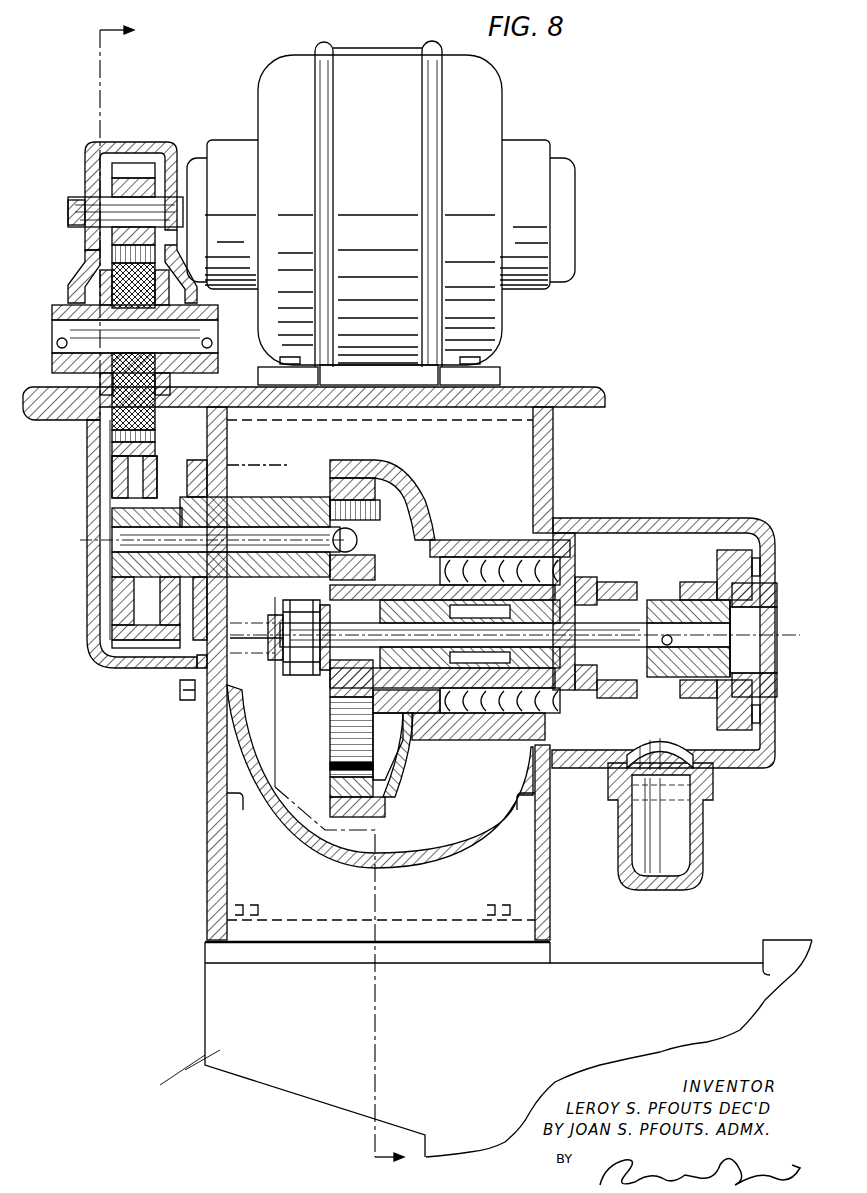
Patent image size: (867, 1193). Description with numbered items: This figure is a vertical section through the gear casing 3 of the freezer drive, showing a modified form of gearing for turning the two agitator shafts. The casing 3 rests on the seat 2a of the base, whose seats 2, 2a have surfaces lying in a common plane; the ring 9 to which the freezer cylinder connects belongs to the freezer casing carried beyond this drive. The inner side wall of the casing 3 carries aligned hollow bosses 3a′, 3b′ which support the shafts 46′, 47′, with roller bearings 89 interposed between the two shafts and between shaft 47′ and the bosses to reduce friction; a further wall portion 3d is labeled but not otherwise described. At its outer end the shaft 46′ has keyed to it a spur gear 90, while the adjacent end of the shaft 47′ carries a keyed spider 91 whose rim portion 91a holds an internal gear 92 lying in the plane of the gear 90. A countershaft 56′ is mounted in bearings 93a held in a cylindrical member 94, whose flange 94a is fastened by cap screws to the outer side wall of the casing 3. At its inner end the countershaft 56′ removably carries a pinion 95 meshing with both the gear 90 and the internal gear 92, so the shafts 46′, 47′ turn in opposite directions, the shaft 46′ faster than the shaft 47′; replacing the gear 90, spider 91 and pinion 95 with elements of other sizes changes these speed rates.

The casing 3 is at (208, 848).
The hollow boss 3a′ is at (466, 548).
The hollow boss 3b′ is at (568, 548).
The casing partition wall 3d is at (226, 436).
The seat 2 is at (523, 960).
The seat 2a is at (775, 946).
The ring 9 is at (260, 594).
The shaft 46′ is at (500, 622).
The shaft 47′ is at (436, 580).
The auxiliary shaft 56′ is at (249, 560).
The roller bearings 89 is at (470, 634).
The spur gear 90 is at (332, 690).
The spider 91 is at (398, 790).
The rim portion 91a is at (333, 805).
The internal gear 92 is at (333, 778).
The bearings 93a is at (293, 510).
The cylindrical member 94 is at (253, 508).
The flange 94a is at (230, 632).
The pinion 95 is at (398, 490).